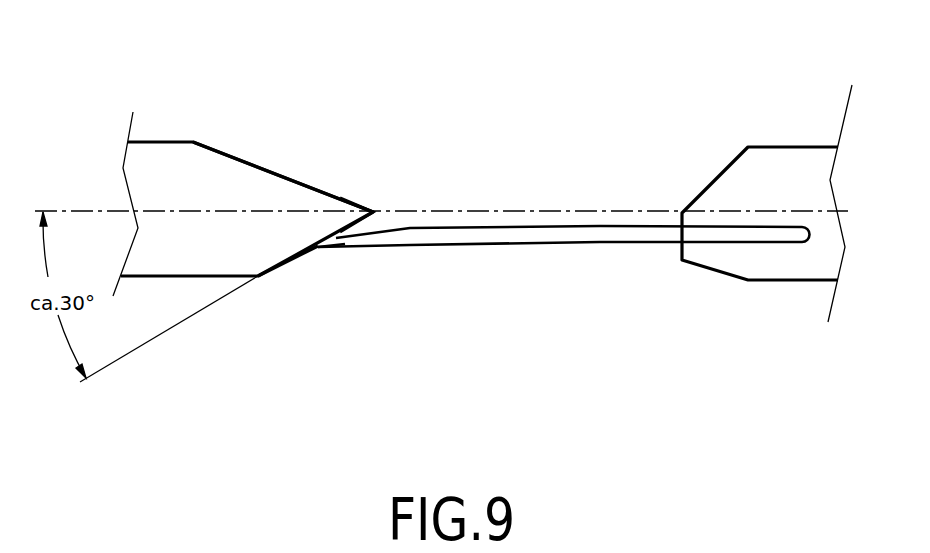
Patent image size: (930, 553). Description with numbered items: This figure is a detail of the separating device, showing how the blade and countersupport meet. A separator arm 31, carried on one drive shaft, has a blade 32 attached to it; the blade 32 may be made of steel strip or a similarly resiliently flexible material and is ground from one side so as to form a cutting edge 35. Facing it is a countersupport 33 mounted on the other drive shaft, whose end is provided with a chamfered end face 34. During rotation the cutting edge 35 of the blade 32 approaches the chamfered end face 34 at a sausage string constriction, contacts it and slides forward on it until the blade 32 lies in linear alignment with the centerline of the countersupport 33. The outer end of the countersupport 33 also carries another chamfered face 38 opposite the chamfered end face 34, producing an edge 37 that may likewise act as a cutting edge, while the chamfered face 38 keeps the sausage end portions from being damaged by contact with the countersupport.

The separator arm 31 is at (792, 180).
The blade 32 is at (527, 240).
The countersupport 33 is at (173, 167).
The chamfered end face 34 is at (282, 267).
The cutting edge 35 is at (312, 249).
The edge 37 is at (378, 208).
The chamfered face 38 is at (258, 168).